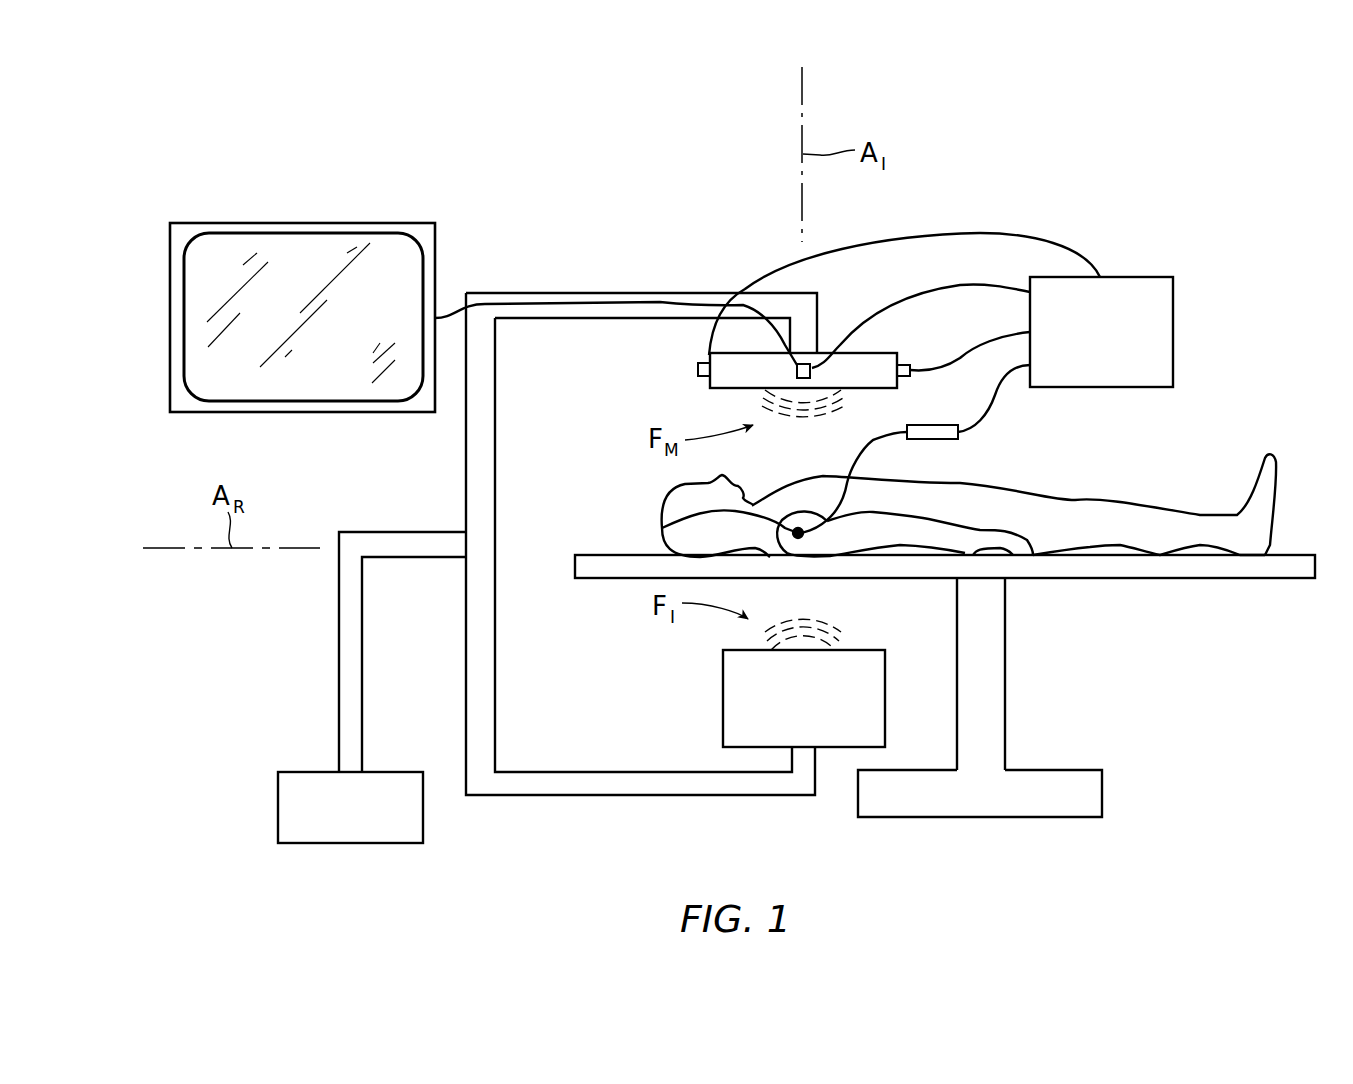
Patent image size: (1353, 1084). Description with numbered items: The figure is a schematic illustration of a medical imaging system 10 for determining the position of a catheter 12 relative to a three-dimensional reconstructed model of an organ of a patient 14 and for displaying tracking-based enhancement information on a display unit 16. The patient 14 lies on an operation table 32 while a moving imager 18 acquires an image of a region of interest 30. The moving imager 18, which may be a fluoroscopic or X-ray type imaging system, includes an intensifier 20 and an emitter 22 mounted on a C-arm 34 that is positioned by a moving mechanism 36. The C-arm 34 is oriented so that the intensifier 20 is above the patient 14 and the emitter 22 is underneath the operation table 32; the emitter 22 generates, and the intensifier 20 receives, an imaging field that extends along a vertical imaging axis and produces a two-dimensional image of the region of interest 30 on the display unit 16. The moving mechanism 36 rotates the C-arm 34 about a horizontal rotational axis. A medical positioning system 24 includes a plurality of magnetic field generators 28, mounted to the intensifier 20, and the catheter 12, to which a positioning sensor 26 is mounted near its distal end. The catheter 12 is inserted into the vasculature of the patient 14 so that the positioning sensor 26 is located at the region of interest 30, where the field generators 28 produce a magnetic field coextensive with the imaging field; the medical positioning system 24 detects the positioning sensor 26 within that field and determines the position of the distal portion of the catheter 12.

The medical imaging system 10 is at (1174, 660).
The catheter 12 is at (862, 445).
The patient 14 is at (1027, 462).
The display unit 16 is at (435, 255).
The moving imager 18 is at (700, 394).
The intensifier 20 is at (848, 353).
The emitter 22 is at (723, 697).
The medical positioning system 24 is at (1173, 332).
The positioning sensor 26 is at (662, 528).
The field generators 28 is at (797, 366).
The region of interest 30 is at (843, 525).
The operation table 32 is at (1248, 578).
The C-arm 34 is at (470, 472).
The moving mechanism 36 is at (278, 806).